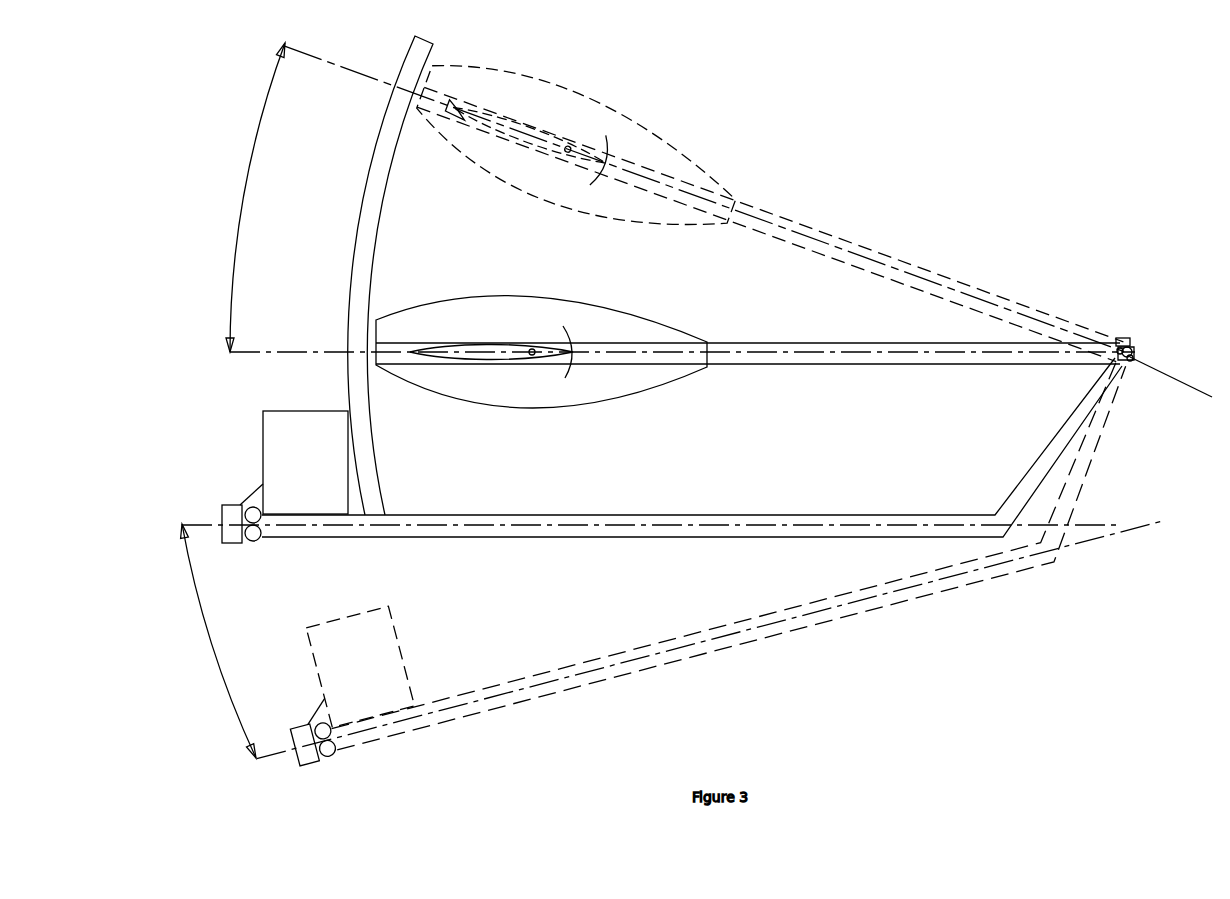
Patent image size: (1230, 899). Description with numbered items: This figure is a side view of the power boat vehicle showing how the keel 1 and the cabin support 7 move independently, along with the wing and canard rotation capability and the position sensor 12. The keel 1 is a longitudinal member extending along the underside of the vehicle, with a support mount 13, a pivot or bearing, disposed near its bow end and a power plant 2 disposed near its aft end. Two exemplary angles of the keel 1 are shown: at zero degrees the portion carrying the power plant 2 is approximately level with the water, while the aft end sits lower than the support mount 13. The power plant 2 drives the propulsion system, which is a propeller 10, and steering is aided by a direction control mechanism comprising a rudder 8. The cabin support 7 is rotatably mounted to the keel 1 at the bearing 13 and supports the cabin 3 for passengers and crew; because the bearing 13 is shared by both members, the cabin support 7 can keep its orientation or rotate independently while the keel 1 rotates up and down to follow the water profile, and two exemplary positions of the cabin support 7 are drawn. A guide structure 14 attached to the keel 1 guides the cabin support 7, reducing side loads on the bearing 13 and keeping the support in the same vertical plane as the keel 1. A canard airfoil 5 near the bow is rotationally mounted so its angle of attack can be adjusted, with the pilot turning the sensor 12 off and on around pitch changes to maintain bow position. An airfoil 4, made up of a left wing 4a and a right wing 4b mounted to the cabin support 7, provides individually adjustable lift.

The keel 1 is at (615, 515).
The power plant 2 is at (327, 572).
The cabin 3 is at (700, 160).
The airfoil 4 is at (610, 150).
The left wing 4a is at (497, 342).
The right wing 4b is at (550, 352).
The canard airfoil 5 is at (1212, 397).
The cabin support 7 is at (798, 222).
The rudder 8 is at (227, 546).
The propeller 10 is at (258, 541).
The sensor 12 is at (1118, 339).
The support mount 13 is at (1133, 356).
The guide structure 14 is at (376, 470).